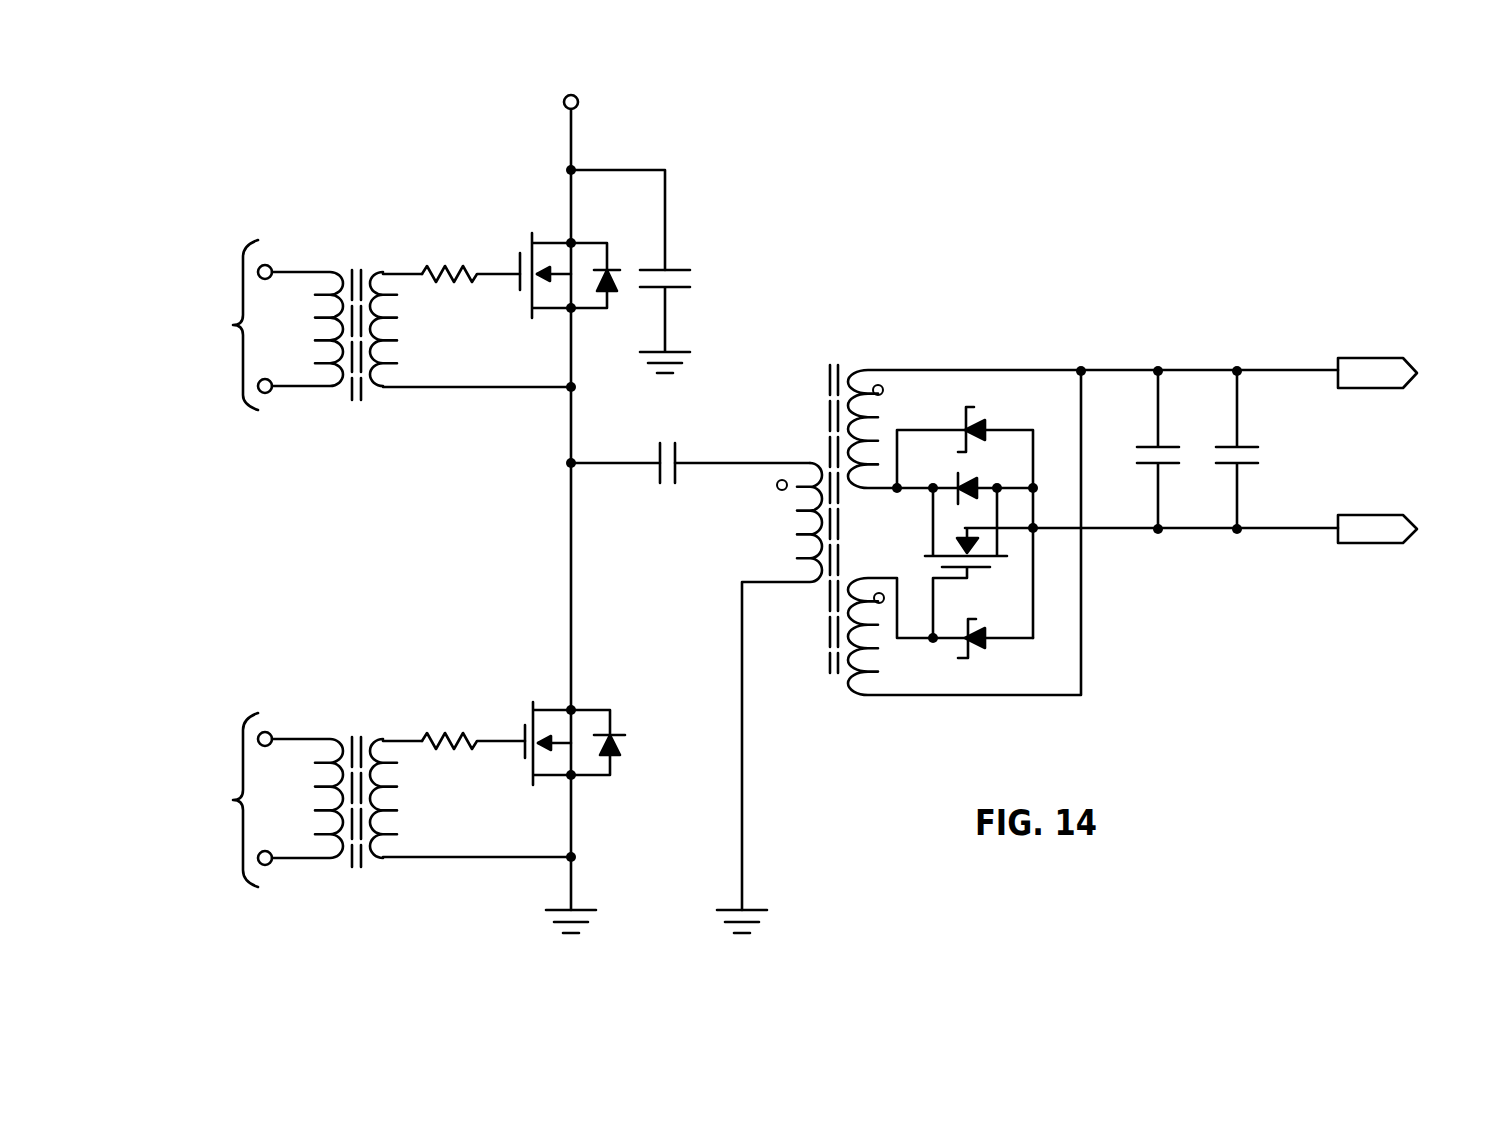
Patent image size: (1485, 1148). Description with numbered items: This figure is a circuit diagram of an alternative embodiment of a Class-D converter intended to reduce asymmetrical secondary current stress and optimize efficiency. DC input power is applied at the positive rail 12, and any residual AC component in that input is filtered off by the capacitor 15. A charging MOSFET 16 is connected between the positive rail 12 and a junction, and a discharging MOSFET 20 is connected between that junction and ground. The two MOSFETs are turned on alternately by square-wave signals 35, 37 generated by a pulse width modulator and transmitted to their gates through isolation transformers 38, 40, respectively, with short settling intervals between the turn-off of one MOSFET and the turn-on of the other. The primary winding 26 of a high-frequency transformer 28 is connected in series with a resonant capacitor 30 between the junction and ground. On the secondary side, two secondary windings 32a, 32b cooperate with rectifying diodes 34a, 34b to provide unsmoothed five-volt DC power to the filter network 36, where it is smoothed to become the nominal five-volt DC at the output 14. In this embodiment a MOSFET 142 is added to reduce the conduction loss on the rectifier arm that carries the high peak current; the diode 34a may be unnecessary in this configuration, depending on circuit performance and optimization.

The positive rail 12 is at (577, 107).
The charging MOSFET 16 is at (548, 253).
The capacitor 15 is at (675, 293).
The square-wave signal 35 is at (236, 325).
The isolation transformer 38 is at (353, 398).
The resonant capacitor 30 is at (680, 450).
The primary winding 26 is at (813, 537).
The high-frequency transformer 28 is at (833, 336).
The secondary winding 32a is at (865, 418).
The secondary winding 32b is at (864, 649).
The rectifying diode 34a is at (972, 427).
The rectifying diode 34b is at (980, 645).
The MOSFET 142 is at (986, 538).
The filter network 36 is at (1262, 363).
The output 14 is at (1412, 343).
The isolation transformer 40 is at (357, 737).
The square-wave signal 37 is at (237, 800).
The discharging MOSFET 20 is at (557, 730).